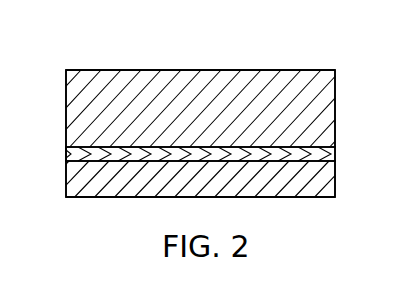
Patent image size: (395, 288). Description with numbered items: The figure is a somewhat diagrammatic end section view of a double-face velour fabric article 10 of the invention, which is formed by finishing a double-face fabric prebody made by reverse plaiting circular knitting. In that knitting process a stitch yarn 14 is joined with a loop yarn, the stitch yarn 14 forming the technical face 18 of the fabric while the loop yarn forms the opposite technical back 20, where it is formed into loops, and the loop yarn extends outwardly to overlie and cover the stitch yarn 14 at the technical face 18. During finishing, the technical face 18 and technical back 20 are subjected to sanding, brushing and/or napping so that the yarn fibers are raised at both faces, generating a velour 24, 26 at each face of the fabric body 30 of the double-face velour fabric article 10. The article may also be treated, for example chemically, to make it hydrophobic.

The double-face velour fabric article 10 is at (288, 58).
The stitch yarn 14 is at (335, 161).
The technical face 18 is at (293, 198).
The technical back 20 is at (113, 70).
The velour 24 is at (338, 110).
The velour 26 is at (335, 188).
The fabric body 30 is at (66, 149).